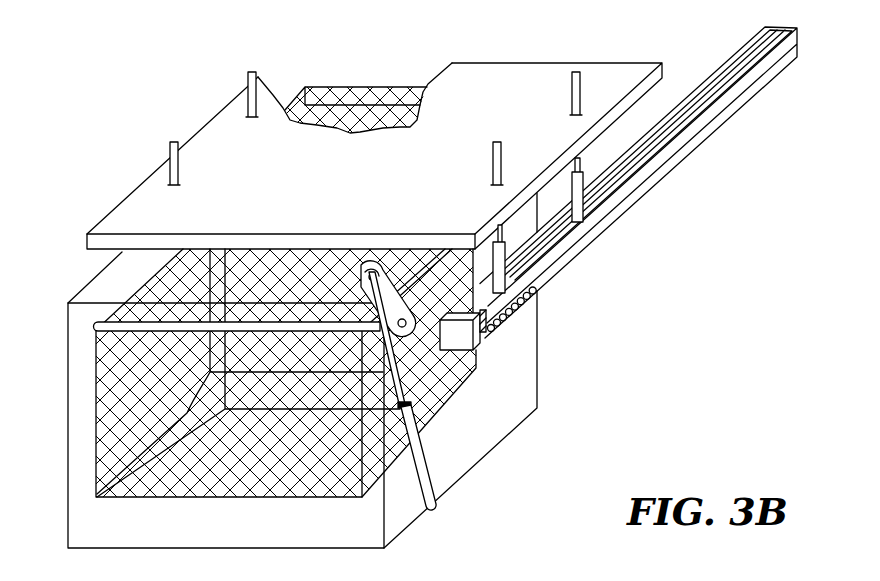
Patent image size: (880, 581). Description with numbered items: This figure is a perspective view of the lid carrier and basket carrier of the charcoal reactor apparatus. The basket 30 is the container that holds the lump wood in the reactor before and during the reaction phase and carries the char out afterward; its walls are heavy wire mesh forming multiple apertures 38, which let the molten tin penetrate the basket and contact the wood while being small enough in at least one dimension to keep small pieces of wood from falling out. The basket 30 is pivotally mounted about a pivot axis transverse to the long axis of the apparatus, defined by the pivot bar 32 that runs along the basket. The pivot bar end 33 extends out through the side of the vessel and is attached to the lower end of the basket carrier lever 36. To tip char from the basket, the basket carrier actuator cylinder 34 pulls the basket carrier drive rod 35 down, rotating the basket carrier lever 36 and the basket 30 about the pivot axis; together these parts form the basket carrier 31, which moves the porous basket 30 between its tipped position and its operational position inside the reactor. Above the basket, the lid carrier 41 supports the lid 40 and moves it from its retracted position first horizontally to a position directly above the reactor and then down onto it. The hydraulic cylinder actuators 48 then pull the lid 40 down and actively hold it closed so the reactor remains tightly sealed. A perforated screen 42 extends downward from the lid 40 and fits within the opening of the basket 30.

The basket 30 is at (97, 378).
The basket carrier 31 is at (438, 452).
The pivot bar 32 is at (100, 322).
The pivot bar end 33 is at (422, 297).
The basket carrier actuator cylinder 34 is at (423, 478).
The basket carrier drive rod 35 is at (404, 380).
The basket carrier lever 36 is at (380, 262).
The apertures 38 is at (110, 438).
The lid 40 is at (488, 88).
The lid carrier 41 is at (673, 199).
The perforated screen 42 is at (377, 100).
The hydraulic cylinder actuators 48 is at (578, 205).